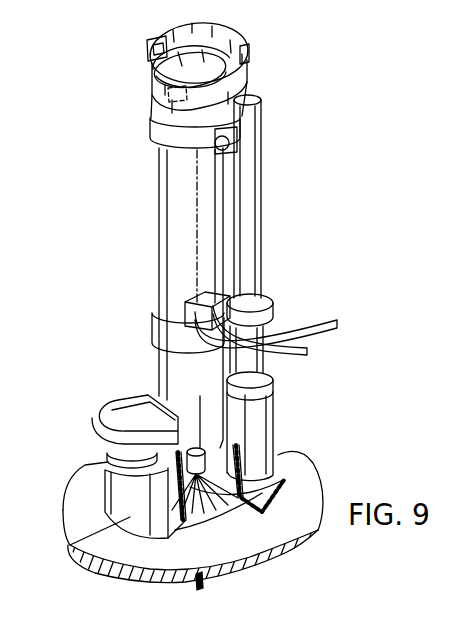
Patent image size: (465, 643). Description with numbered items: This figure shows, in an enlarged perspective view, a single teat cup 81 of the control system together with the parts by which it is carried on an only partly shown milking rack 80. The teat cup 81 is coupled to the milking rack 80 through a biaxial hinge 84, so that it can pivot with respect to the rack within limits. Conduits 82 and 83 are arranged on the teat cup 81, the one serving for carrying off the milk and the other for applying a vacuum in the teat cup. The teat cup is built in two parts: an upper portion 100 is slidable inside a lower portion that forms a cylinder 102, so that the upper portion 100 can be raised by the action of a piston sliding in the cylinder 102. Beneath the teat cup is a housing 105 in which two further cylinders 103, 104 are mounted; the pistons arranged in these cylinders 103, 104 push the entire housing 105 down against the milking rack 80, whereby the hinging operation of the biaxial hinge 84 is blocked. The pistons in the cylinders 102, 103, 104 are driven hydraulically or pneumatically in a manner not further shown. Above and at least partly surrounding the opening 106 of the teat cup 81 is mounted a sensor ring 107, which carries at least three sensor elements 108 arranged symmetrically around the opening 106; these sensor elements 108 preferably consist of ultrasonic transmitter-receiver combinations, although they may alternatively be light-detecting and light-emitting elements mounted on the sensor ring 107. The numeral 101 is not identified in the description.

The milking rack 80 is at (198, 591).
The teat cup 81 is at (160, 209).
The conduit 82 is at (333, 322).
The conduit 83 is at (302, 354).
The biaxial hinge 84 is at (227, 496).
The upper portion of teat cup 100 is at (176, 247).
The support arm 101 is at (181, 377).
The cylinder 102 is at (250, 195).
The cylinder 103 is at (105, 489).
The cylinder 104 is at (270, 443).
The housing 105 is at (72, 547).
The opening 106 is at (198, 57).
The sensor ring 107 is at (249, 74).
The sensor element 108 is at (162, 40).